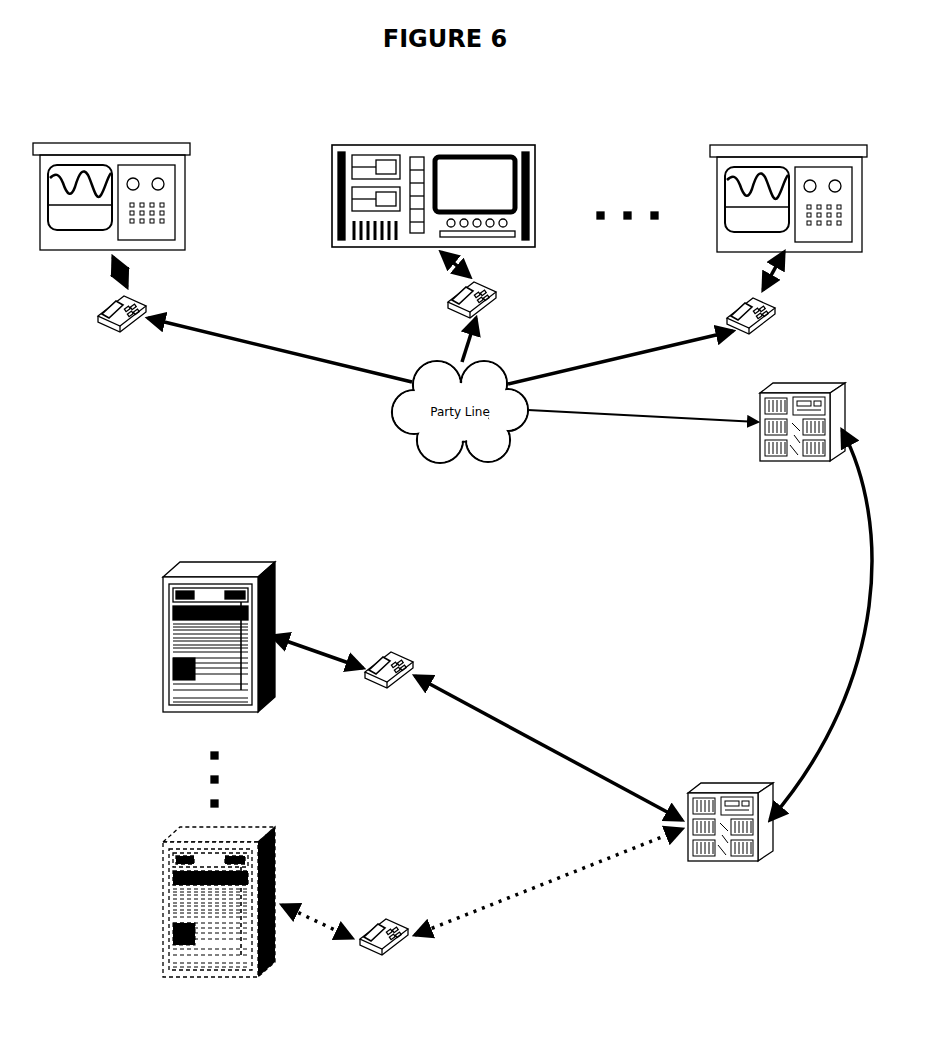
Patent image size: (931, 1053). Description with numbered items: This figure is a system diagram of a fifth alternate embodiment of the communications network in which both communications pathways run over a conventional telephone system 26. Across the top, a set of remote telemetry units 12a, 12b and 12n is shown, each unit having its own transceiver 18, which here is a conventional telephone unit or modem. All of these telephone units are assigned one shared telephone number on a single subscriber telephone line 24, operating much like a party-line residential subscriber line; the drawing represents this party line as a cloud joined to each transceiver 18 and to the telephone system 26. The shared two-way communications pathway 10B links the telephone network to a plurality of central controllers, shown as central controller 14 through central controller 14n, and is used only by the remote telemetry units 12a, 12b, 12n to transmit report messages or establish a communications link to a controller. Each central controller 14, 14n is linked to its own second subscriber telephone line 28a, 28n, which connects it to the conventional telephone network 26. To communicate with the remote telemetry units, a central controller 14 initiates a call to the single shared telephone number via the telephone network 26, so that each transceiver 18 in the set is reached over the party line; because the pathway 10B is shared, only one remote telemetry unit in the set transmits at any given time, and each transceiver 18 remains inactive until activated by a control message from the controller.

The remote telemetry unit 12a is at (187, 198).
The remote telemetry unit 12b is at (537, 193).
The remote telemetry unit 12n is at (787, 146).
The transceiver 18 is at (148, 311).
The single subscriber telephone line 24 is at (616, 420).
The conventional telephone system 26 is at (766, 635).
The second communication pathway 10B is at (866, 630).
The central controller 14 is at (163, 636).
The central controller 14n is at (163, 903).
The second subscriber telephone line 28a is at (542, 747).
The second subscriber telephone line 28n is at (548, 880).